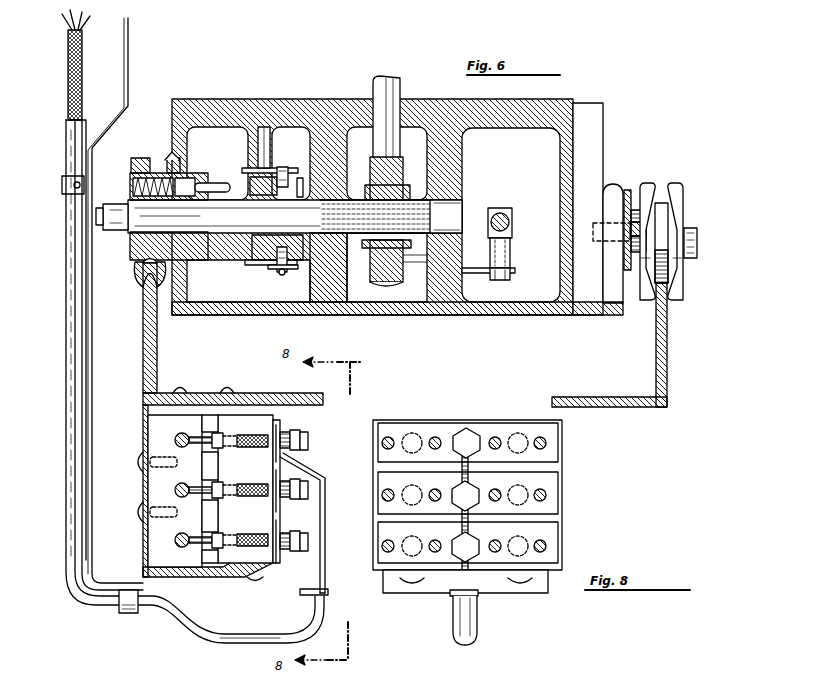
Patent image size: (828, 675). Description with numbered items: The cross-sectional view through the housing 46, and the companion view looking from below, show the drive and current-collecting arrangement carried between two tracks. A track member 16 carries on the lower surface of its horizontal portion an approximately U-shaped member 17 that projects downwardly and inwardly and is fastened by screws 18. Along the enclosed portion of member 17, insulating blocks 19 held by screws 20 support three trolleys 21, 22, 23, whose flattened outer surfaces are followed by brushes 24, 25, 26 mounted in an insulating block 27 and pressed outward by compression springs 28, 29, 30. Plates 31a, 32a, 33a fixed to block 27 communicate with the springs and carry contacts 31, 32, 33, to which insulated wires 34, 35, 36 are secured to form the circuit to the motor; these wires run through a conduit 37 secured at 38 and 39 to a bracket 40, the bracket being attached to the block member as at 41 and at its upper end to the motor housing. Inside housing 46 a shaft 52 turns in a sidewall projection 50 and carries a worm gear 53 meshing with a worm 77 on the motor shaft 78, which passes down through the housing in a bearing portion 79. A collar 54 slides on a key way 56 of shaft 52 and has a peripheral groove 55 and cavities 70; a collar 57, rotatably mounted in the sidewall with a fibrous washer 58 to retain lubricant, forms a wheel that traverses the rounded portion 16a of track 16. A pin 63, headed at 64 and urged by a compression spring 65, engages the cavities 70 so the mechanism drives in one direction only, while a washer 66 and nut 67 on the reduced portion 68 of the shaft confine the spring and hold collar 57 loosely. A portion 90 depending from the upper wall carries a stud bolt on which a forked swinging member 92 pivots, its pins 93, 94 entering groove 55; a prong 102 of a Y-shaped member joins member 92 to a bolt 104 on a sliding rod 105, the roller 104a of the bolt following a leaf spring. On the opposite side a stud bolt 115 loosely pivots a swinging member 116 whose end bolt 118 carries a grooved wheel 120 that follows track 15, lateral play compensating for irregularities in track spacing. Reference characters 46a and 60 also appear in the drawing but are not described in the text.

In FIG. 6, the track 15 is at (670, 390).
In FIG. 6, the track member 16 is at (157, 365).
In FIG. 6, the rounded portion of track 16a is at (138, 280).
In FIG. 6, the U-shaped member 17 is at (143, 412).
In FIG. 6, the screws 18 is at (228, 390).
In FIG. 6, the insulating blocks 19 is at (155, 430).
In FIG. 6, the screws 20 is at (136, 460).
In FIG. 6, the trolley 21 is at (180, 434).
In FIG. 6, the trolley 22 is at (180, 487).
In FIG. 6, the trolley 23 is at (180, 538).
In FIG. 6, the brush 24 is at (222, 432).
In FIG. 6, the brush 25 is at (222, 480).
In FIG. 6, the brush 26 is at (220, 532).
In FIG. 6, the insulating block 27 is at (282, 415).
In FIG. 6, the compression spring 28 is at (258, 430).
In FIG. 6, the compression spring 29 is at (254, 480).
In FIG. 6, the compression spring 30 is at (254, 534).
In FIG. 6, the contact 31 is at (300, 432).
In FIG. 8, the contact 31 is at (475, 455).
In FIG. 6, the plate 31a is at (283, 428).
In FIG. 8, the plate 31a is at (550, 450).
In FIG. 6, the contact 32 is at (306, 478).
In FIG. 8, the contact 32 is at (477, 507).
In FIG. 6, the plate 32a is at (300, 468).
In FIG. 8, the plate 32a is at (553, 508).
In FIG. 6, the contact 33 is at (283, 535).
In FIG. 8, the contact 33 is at (477, 558).
In FIG. 6, the plate 33a is at (290, 565).
In FIG. 8, the plate 33a is at (545, 535).
In FIG. 6, the insulated wire 34 is at (322, 500).
In FIG. 8, the insulated wire 34 is at (462, 528).
In FIG. 6, the insulated wire 35 is at (322, 520).
In FIG. 6, the insulated wire 36 is at (305, 588).
In FIG. 6, the conduit 37 is at (258, 640).
In FIG. 8, the conduit 37 is at (470, 632).
In FIG. 6, the conduit securing point 38 is at (125, 614).
In FIG. 6, the conduit securing point 39 is at (62, 187).
In FIG. 6, the bracket 40 is at (90, 378).
In FIG. 6, the bracket securing point 41 is at (262, 578).
In FIG. 8, the bracket securing point 41 is at (410, 578).
In FIG. 6, the housing 46 is at (545, 112).
In FIG. 6, the housing base plate 46a is at (538, 318).
In FIG. 6, the projection 50 is at (310, 278).
In FIG. 6, the shaft 52 is at (458, 210).
In FIG. 6, the worm gear 53 is at (378, 282).
In FIG. 6, the collar 54 is at (258, 250).
In FIG. 6, the peripheral groove 55 is at (272, 262).
In FIG. 6, the key way 56 is at (282, 204).
In FIG. 6, the collar 57 is at (205, 248).
In FIG. 6, the fibrous washer 58 is at (170, 158).
In FIG. 6, the retainer 60 is at (140, 162).
In FIG. 6, the pin 63 is at (222, 183).
In FIG. 6, the pin head 64 is at (188, 176).
In FIG. 6, the compression spring 65 is at (150, 165).
In FIG. 6, the washer 66 is at (131, 178).
In FIG. 6, the nut 67 is at (120, 230).
In FIG. 6, the reduced shaft portion 68 is at (196, 212).
In FIG. 6, the cavities 70 is at (250, 180).
In FIG. 6, the worm 77 is at (448, 213).
In FIG. 6, the motor shaft 78 is at (392, 80).
In FIG. 6, the bearing portion 79 is at (418, 107).
In FIG. 6, the depending portion 90 is at (272, 150).
In FIG. 6, the swinging member 92 is at (250, 178).
In FIG. 6, the pin 93 is at (284, 170).
In FIG. 6, the pin 94 is at (278, 274).
In FIG. 6, the prong 102 is at (420, 278).
In FIG. 6, the bolt 104 is at (502, 281).
In FIG. 6, the roller 104a is at (510, 260).
In FIG. 6, the sliding rod 105 is at (512, 221).
In FIG. 6, the stud bolt 115 is at (645, 228).
In FIG. 6, the swinging member 116 is at (630, 190).
In FIG. 6, the bolt 118 is at (697, 242).
In FIG. 6, the grooved wheel 120 is at (676, 196).